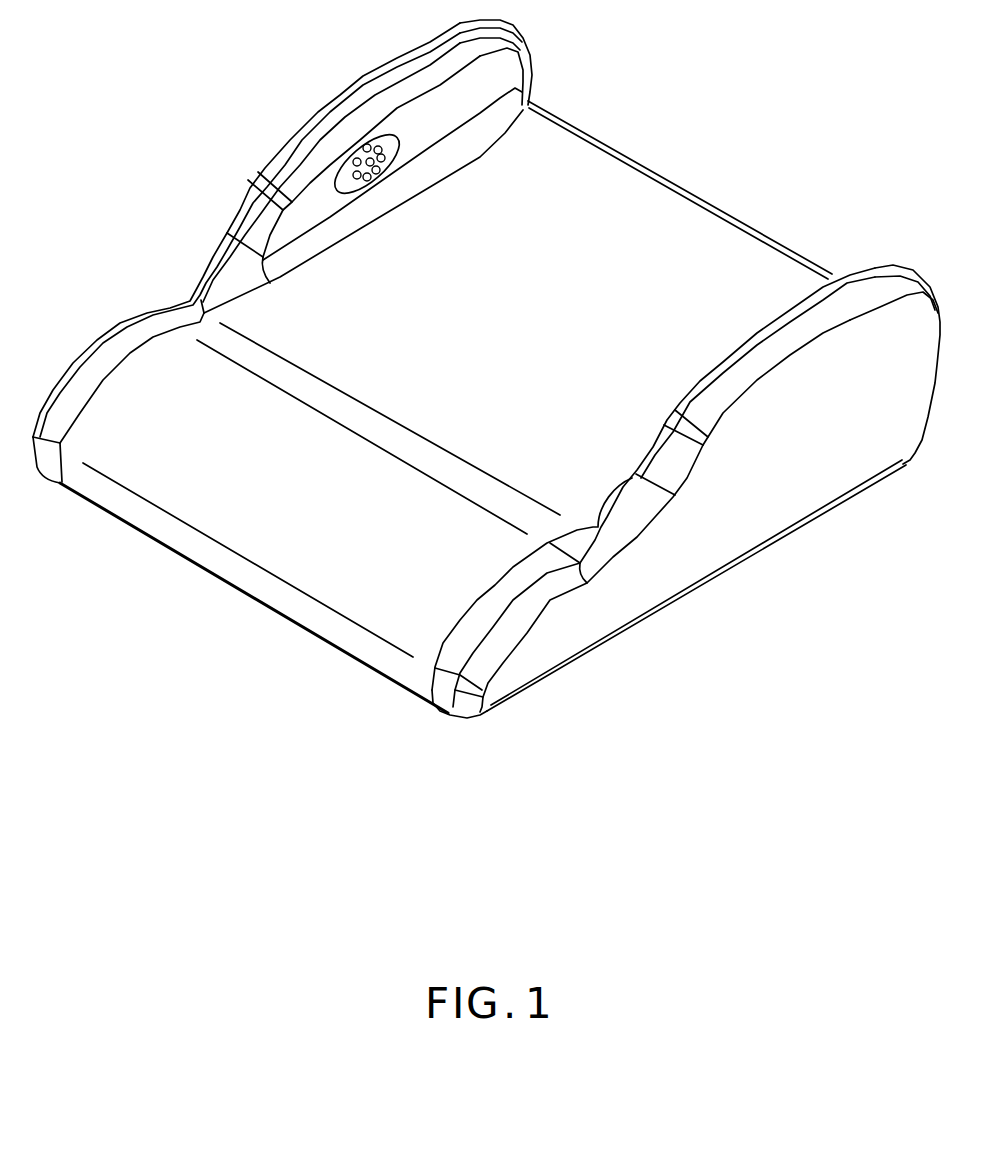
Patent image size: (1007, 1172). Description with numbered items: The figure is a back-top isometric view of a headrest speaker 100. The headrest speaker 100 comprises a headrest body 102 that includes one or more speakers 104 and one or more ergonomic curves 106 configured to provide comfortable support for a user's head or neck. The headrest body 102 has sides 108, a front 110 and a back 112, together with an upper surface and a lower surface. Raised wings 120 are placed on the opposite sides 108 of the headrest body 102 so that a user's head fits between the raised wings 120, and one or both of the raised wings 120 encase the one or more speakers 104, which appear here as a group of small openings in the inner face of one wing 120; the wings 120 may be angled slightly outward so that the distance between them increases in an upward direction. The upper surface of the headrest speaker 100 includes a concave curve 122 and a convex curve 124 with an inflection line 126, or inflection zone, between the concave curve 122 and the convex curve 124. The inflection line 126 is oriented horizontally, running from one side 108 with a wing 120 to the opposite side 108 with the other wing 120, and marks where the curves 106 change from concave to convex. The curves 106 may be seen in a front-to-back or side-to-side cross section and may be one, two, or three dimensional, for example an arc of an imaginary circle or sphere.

The headrest speaker 100 is at (125, 49).
The headrest body 102 is at (241, 100).
The speakers 104 is at (374, 189).
The ergonomic curves 106 is at (201, 305).
The sides 108 is at (194, 194).
The front 110 is at (238, 641).
The back 112 is at (659, 147).
The raised wings 120 is at (396, 60).
The concave curve 122 is at (640, 243).
The convex curve 124 is at (355, 533).
The inflection line 126 is at (367, 406).